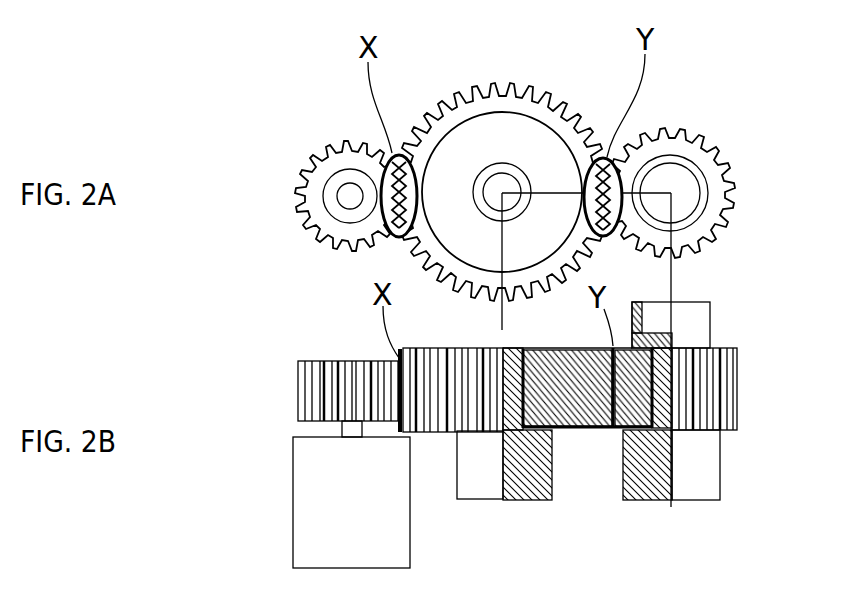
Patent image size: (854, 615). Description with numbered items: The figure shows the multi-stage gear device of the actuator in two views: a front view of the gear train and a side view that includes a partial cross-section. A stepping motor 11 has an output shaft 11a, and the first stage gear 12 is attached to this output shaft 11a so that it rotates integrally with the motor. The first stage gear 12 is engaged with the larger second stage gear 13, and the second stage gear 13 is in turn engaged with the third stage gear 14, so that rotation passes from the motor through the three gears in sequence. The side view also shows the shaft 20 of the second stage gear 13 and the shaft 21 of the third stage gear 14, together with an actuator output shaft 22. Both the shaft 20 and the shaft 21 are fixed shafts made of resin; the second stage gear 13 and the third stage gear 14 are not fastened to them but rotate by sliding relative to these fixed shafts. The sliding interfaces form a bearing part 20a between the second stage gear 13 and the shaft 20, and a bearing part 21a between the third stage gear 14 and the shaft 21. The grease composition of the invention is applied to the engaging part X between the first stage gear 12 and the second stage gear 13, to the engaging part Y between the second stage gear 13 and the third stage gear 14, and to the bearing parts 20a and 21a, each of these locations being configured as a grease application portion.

The stepping motor 11 is at (317, 487).
The output shaft 11a is at (342, 430).
The first stage gear 12 is at (332, 386).
The second stage gear 13 is at (445, 392).
The third stage gear 14 is at (703, 400).
The shaft 20 is at (480, 470).
The bearing part 20a is at (568, 430).
The shaft 21 is at (702, 467).
The bearing part 21a is at (668, 367).
The actuator output shaft 22 is at (692, 313).